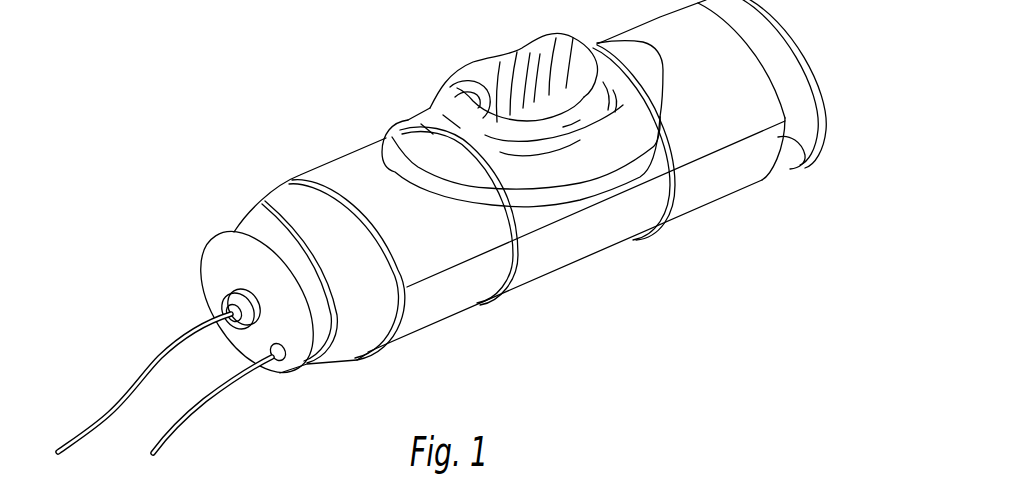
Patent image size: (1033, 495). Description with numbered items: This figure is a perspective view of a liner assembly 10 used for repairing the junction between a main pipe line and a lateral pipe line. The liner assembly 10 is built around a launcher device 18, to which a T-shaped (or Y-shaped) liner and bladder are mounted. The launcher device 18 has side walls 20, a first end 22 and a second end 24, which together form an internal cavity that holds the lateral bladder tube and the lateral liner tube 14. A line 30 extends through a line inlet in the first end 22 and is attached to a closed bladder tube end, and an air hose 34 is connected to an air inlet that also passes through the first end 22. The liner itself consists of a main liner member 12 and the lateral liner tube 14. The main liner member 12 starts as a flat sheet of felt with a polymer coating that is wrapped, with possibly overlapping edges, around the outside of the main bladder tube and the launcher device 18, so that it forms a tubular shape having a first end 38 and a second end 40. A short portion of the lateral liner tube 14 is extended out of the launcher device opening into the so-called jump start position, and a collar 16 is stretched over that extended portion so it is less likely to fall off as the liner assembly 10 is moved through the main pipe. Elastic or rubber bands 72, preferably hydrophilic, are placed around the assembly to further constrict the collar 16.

The liner assembly 10 is at (270, 97).
The main liner member 12 is at (563, 257).
The lateral liner tube 14 is at (538, 47).
The collar 16 is at (433, 110).
The launcher device 18 is at (265, 265).
The side walls 20 is at (288, 192).
The first end 22 is at (217, 280).
The second end 24 is at (818, 50).
The line 30 is at (117, 404).
The air hose 34 is at (182, 430).
The first end 38 is at (371, 352).
The second end 40 is at (803, 151).
The elastic or rubber bands 72 is at (418, 124).